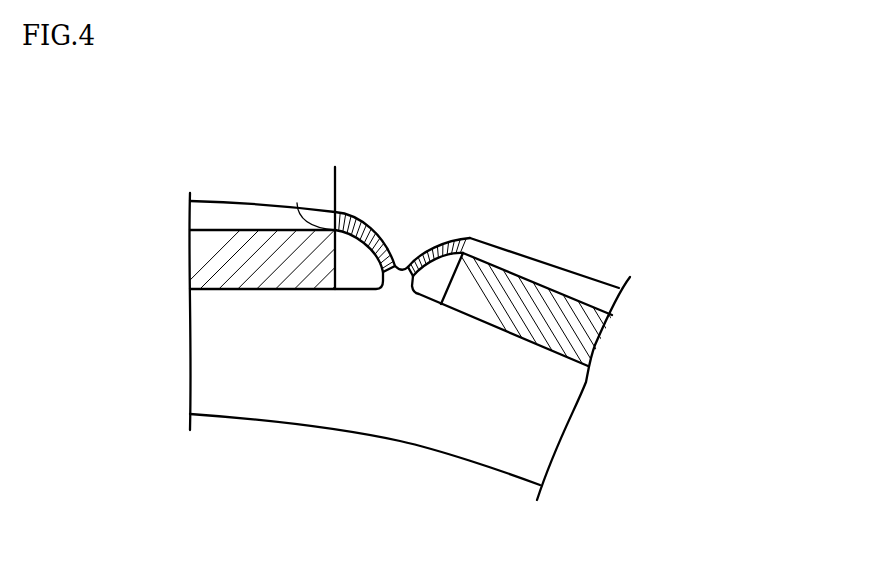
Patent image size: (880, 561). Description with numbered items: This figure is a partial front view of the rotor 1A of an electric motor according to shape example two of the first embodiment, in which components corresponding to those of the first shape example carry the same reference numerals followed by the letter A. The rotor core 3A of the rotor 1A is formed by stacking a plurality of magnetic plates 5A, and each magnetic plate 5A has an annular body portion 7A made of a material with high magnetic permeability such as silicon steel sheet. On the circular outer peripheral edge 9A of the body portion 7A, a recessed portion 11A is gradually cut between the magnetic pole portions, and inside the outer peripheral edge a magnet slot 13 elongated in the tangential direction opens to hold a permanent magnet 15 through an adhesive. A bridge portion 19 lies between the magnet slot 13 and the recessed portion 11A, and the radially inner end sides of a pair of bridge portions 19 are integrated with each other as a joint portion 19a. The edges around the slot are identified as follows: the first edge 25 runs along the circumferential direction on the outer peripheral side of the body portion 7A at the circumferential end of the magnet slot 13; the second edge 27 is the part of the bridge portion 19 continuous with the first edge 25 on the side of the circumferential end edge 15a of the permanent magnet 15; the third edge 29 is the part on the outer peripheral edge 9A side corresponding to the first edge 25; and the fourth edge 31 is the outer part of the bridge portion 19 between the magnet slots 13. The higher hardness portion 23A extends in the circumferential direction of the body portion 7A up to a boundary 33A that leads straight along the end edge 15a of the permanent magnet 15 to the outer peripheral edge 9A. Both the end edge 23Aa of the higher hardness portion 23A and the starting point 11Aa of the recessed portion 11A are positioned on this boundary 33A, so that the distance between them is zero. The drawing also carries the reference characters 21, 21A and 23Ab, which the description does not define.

The rotor 1A is at (527, 189).
The rotor core 3A is at (544, 227).
The magnetic plate 5A is at (560, 409).
The body portion 7A is at (538, 428).
The outer peripheral edge 9A is at (247, 203).
The recessed portion 11A is at (447, 243).
The starting point of the recessed portion 11Aa is at (335, 211).
The magnet slot 13 is at (236, 279).
The permanent magnet 15 is at (205, 261).
The end edge of the permanent magnet 15a is at (340, 258).
The bridge portion 19 is at (408, 266).
The joint portion 19a is at (402, 275).
The outer surface layer 21 is at (578, 280).
The outer surface layer of first member 21A is at (220, 212).
The higher hardness portion 23A is at (357, 211).
The end edge of the higher hardness portion 23Aa is at (297, 203).
The bent portion end 23Ab is at (396, 275).
The first edge 25 is at (304, 267).
The second edge 27 is at (363, 265).
The third edge 29 is at (347, 209).
The fourth edge 31 is at (376, 228).
The boundary 33A is at (336, 182).